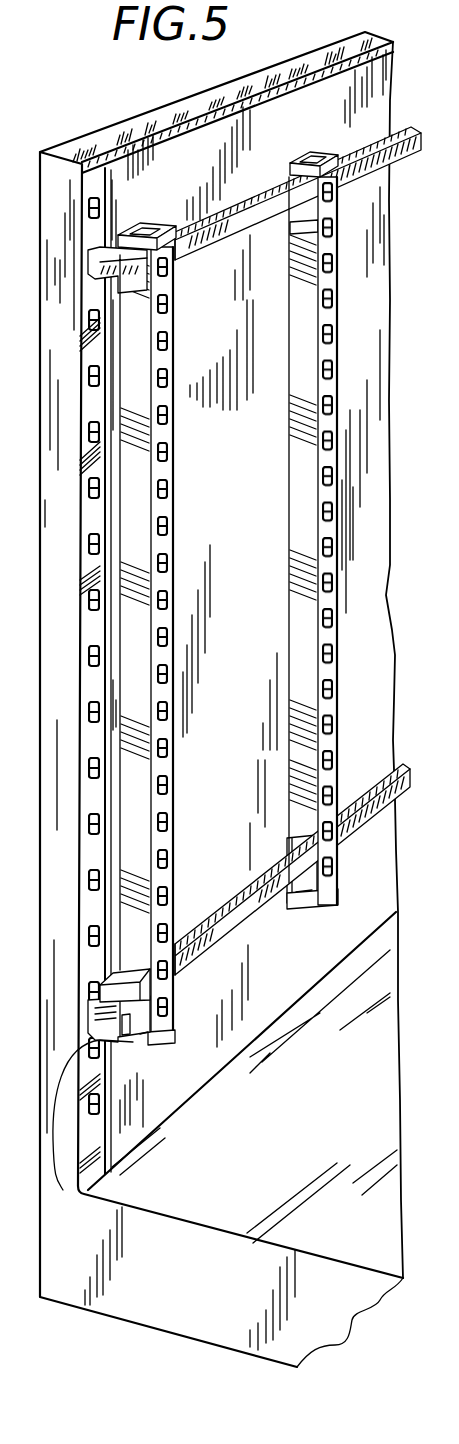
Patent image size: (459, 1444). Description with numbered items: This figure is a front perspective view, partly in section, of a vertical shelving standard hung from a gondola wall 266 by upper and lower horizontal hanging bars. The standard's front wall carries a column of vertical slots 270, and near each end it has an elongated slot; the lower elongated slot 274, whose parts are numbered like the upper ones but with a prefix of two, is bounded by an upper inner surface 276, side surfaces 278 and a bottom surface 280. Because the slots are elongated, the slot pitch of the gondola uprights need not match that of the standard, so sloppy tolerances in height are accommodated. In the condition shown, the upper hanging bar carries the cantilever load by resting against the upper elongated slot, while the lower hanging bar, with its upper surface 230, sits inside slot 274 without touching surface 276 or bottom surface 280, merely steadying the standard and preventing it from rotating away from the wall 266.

The shelf support assembly 230 is at (212, 895).
The wall panel 266 is at (221, 699).
The vertical slotted posts 270 is at (318, 806).
The lower horizontal slot 274 is at (145, 1003).
The surface 276 is at (150, 962).
The post bracket 278 is at (313, 867).
The bottom connector 280 is at (133, 1042).